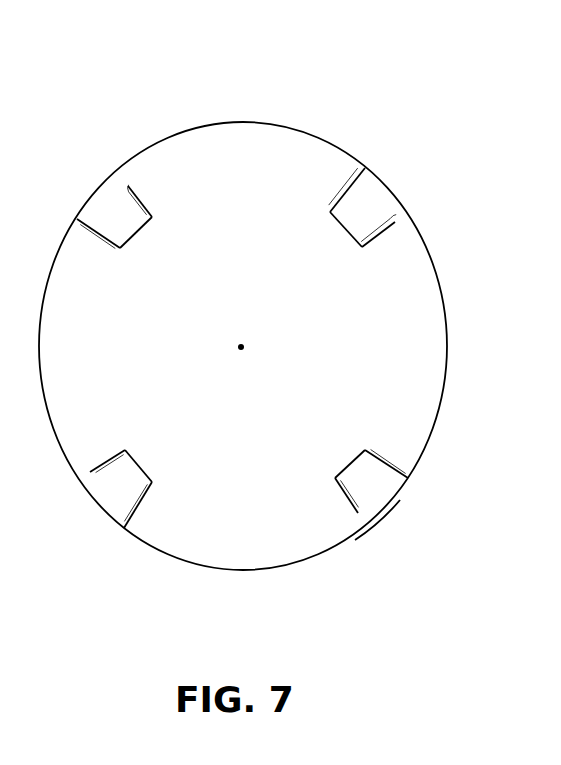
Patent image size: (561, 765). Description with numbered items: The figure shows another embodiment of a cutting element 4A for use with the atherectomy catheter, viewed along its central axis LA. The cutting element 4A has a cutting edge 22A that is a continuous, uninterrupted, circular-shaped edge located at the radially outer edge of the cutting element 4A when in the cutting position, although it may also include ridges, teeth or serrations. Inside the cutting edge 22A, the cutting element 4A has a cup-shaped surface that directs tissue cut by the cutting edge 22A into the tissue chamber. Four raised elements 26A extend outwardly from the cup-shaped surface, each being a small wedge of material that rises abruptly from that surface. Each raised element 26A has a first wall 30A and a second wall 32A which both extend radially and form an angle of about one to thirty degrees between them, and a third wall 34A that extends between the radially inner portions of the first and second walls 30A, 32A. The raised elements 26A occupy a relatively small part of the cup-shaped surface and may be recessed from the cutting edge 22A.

The cutting element 4A is at (428, 106).
The cutting edge 22A is at (432, 256).
The raised element 26A is at (367, 487).
The first wall 30A is at (348, 192).
The second wall 32A is at (137, 190).
The third wall 34A is at (140, 228).
The longitudinal axis LA is at (241, 347).